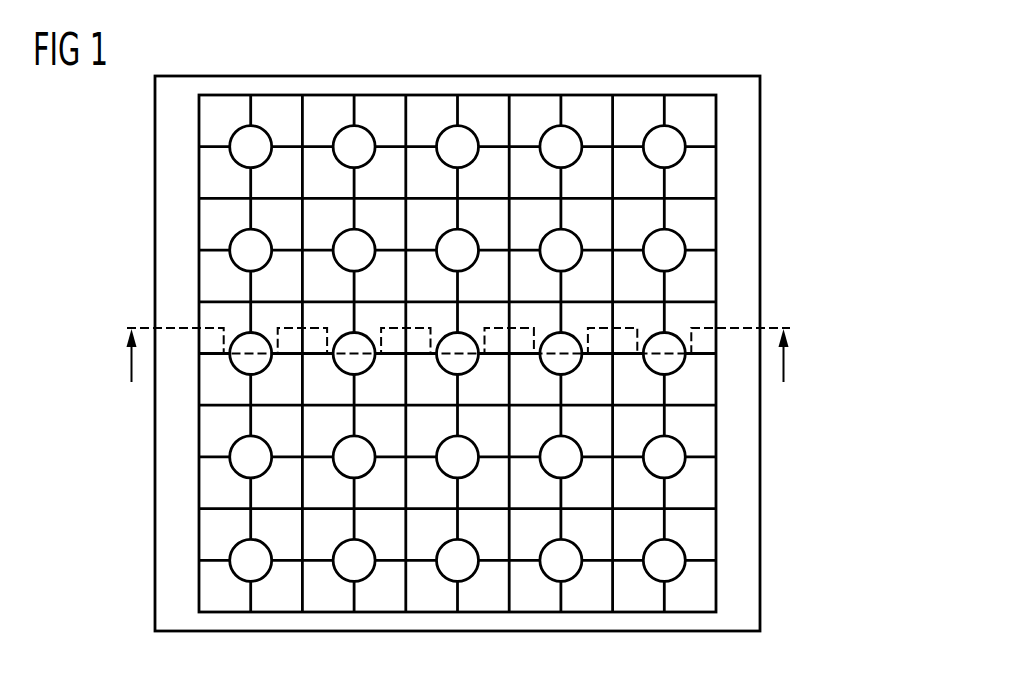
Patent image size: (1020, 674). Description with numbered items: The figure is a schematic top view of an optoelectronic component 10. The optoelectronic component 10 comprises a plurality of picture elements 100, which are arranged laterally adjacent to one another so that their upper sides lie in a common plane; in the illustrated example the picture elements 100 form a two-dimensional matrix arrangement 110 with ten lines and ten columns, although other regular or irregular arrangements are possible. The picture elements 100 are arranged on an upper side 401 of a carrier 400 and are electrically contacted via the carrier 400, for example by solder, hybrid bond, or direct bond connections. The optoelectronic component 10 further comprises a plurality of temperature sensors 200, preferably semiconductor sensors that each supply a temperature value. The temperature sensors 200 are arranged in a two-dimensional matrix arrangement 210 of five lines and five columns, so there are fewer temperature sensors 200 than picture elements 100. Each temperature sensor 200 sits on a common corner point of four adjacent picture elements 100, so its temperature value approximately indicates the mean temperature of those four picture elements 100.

The optoelectronic component 10 is at (780, 50).
The picture elements 100 is at (263, 108).
The two-dimensional matrix arrangement 110 is at (376, 222).
The temperature sensors 200 is at (458, 297).
The two-dimensional matrix arrangement 210 is at (462, 243).
The carrier 400 is at (710, 76).
The upper side 401 is at (738, 102).